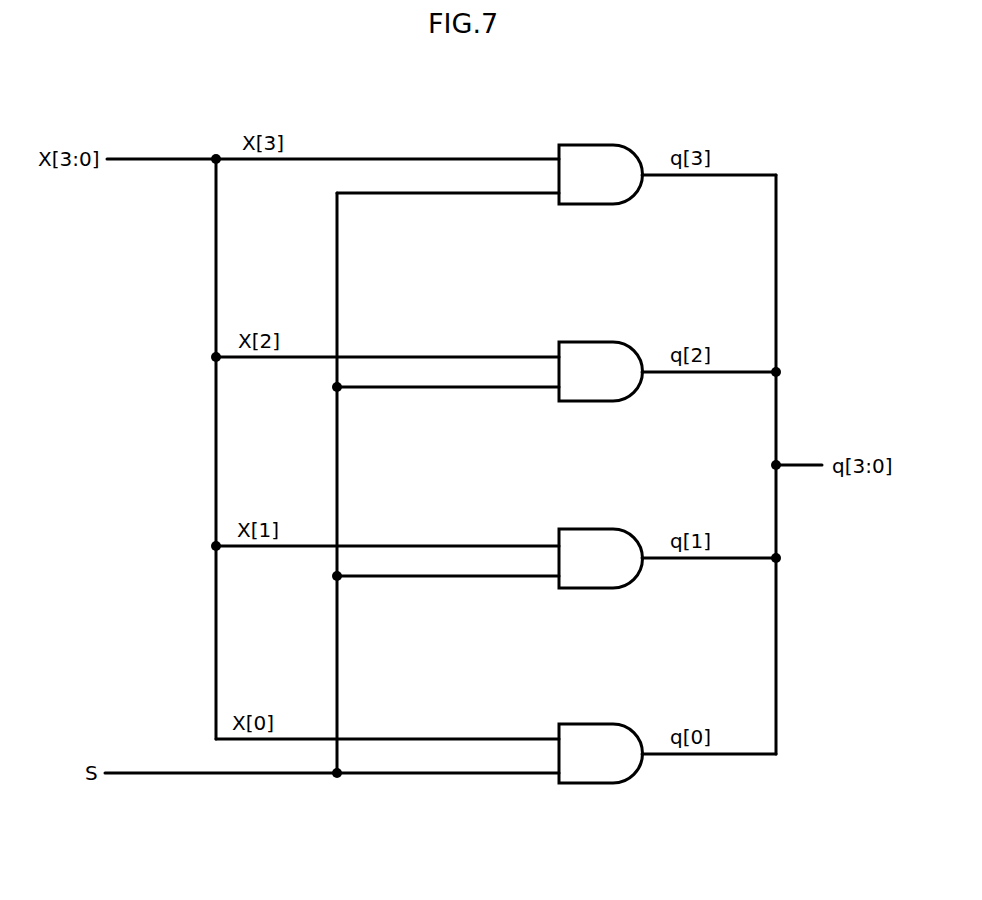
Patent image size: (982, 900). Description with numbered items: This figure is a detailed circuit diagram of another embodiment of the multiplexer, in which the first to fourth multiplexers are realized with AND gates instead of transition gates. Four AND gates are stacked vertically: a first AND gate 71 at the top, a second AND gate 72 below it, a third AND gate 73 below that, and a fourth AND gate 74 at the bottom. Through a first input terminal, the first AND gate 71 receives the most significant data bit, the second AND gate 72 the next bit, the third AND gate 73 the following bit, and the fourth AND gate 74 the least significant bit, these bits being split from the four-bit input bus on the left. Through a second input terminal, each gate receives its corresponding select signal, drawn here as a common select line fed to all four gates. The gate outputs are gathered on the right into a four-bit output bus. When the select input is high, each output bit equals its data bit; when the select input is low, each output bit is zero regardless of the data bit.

The first AND gate 71 is at (630, 198).
The second AND gate 72 is at (630, 395).
The third AND gate 73 is at (628, 583).
The fourth AND gate 74 is at (632, 778).